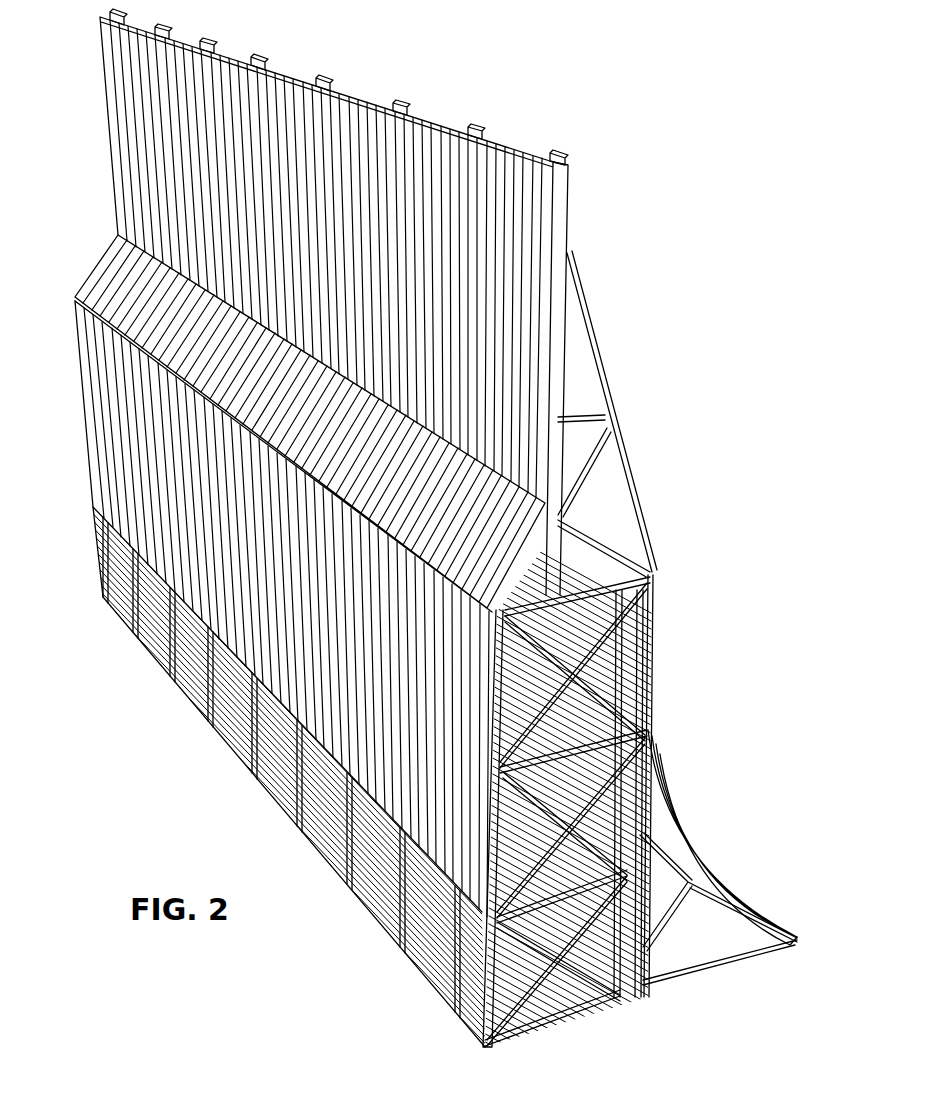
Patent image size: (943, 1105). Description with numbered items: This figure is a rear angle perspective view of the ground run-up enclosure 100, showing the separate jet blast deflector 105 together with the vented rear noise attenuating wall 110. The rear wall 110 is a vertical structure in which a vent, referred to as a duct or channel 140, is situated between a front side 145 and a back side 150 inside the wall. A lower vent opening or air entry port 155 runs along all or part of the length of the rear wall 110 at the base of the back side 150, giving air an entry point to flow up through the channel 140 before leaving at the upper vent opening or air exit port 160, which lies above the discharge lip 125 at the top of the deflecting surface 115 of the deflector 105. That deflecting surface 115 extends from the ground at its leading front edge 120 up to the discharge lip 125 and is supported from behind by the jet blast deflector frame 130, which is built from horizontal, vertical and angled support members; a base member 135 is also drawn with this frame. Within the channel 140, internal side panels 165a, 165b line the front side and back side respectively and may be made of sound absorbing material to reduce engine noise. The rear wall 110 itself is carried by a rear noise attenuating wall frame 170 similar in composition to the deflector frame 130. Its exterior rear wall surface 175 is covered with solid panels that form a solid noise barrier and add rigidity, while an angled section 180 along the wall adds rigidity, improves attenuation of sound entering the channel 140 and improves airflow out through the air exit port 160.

The ground run-up enclosure 100 is at (708, 152).
The jet blast deflector 105 is at (660, 812).
The vented rear noise attenuating wall 110 is at (137, 172).
The front deflecting surface 115 is at (735, 880).
The leading front edge 120 is at (778, 920).
The discharge edge or lip 125 is at (655, 748).
The jet blast deflector frame 130 is at (695, 900).
The base beam 135 is at (647, 983).
The channel 140 is at (655, 800).
The front side 145 is at (625, 785).
The back side 150 is at (525, 815).
The lower vent opening or air entry port 155 is at (272, 782).
The upper vent opening or air exit port 160 is at (597, 487).
The internal side panel 165a is at (598, 872).
The internal side panel 165b is at (480, 910).
The rear noise attenuating wall frame 170 is at (530, 717).
The exterior rear wall surface 175 is at (100, 432).
The angled section 180 is at (108, 282).